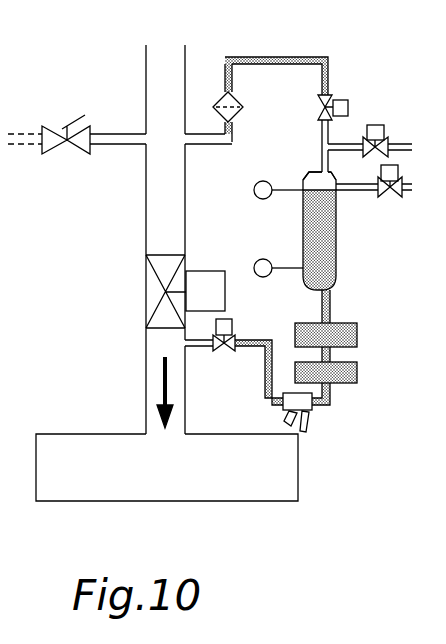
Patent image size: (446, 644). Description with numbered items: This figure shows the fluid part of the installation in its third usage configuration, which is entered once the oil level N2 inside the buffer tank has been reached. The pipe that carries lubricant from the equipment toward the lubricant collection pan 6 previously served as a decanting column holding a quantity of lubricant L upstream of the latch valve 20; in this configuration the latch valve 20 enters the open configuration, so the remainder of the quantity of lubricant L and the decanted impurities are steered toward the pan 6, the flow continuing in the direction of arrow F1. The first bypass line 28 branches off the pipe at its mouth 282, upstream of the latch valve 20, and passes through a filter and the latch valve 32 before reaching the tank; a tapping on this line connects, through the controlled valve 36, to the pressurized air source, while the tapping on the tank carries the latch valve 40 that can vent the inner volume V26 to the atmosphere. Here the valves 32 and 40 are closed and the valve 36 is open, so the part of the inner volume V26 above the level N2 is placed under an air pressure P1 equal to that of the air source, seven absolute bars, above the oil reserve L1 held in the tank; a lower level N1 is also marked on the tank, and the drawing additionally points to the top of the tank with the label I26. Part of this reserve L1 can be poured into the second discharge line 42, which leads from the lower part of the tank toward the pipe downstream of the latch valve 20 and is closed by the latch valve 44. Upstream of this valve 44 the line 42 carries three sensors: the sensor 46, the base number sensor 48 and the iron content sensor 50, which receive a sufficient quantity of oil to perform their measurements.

The quantity of lubricant L is at (153, 198).
The mouth of the first bypass line 282 is at (189, 146).
The first bypass line 28 is at (284, 57).
The latch valve 32 is at (340, 100).
The controlled valve 36 is at (380, 127).
The latch valve 40 is at (398, 171).
The inner volume of the tank V26 is at (316, 168).
The air pressure P1 is at (331, 172).
The vessel inlet I26 is at (341, 170).
The quantity of oil in the tank L1 is at (336, 268).
The oil level N2 is at (279, 182).
The level sensor N1 is at (279, 260).
The latch valve 20 is at (185, 291).
The arrow F1 is at (148, 392).
The latch valve 44 is at (233, 327).
The second discharge line 42 is at (266, 378).
The sensor 46 is at (357, 336).
The base number sensor 48 is at (357, 378).
The iron content sensor 50 is at (303, 405).
The lubricant collection pan 6 is at (167, 467).